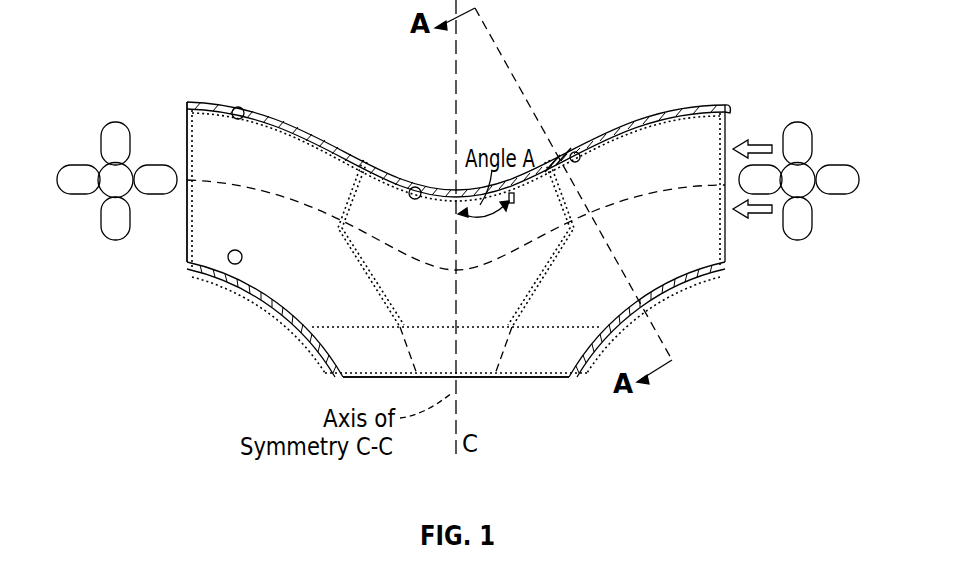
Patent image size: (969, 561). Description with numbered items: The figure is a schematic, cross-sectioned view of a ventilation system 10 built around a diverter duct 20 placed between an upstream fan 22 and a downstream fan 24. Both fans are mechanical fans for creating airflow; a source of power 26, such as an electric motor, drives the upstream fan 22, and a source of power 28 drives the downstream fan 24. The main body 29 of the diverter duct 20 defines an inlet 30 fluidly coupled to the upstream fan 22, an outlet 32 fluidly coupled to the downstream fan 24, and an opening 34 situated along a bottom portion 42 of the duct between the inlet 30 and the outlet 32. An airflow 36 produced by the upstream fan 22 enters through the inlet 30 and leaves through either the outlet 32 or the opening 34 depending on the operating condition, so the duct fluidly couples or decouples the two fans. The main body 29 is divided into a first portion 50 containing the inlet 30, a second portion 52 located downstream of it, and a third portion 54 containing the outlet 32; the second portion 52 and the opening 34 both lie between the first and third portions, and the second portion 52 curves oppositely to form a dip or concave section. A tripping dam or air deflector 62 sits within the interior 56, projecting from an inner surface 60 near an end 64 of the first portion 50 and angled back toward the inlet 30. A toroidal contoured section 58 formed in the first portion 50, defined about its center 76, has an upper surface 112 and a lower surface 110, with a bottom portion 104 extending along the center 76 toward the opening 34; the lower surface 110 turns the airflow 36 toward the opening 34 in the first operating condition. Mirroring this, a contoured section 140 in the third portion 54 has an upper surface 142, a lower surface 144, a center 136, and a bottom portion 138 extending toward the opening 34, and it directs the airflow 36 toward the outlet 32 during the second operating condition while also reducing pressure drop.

The ventilation system 10 is at (598, 434).
The diverter duct 20 is at (665, 104).
The upstream fan 22 is at (803, 201).
The downstream fan 24 is at (112, 143).
The source of power 26 is at (816, 168).
The source of power 28 is at (100, 165).
The main body 29 is at (358, 150).
The inlet 30 is at (720, 104).
The outlet 32 is at (186, 140).
The opening 34 is at (530, 385).
The airflow 36 is at (750, 143).
The bottom portion 42 is at (240, 274).
The first portion 50 is at (705, 158).
The second portion 52 is at (415, 240).
The third portion 54 is at (332, 200).
The interior 56 is at (662, 235).
The contoured section 58 is at (618, 133).
The inner surface 60 is at (566, 155).
The air deflector 62 is at (516, 208).
The end 64 is at (560, 160).
The center 76 is at (690, 190).
The bottom portion 104 is at (550, 313).
The lower surface 110 is at (625, 298).
The upper surface 112 is at (418, 188).
The center 136 is at (280, 200).
The bottom portion 138 is at (338, 308).
The contoured section 140 is at (252, 128).
The upper surface 142 is at (240, 108).
The lower surface 144 is at (235, 250).